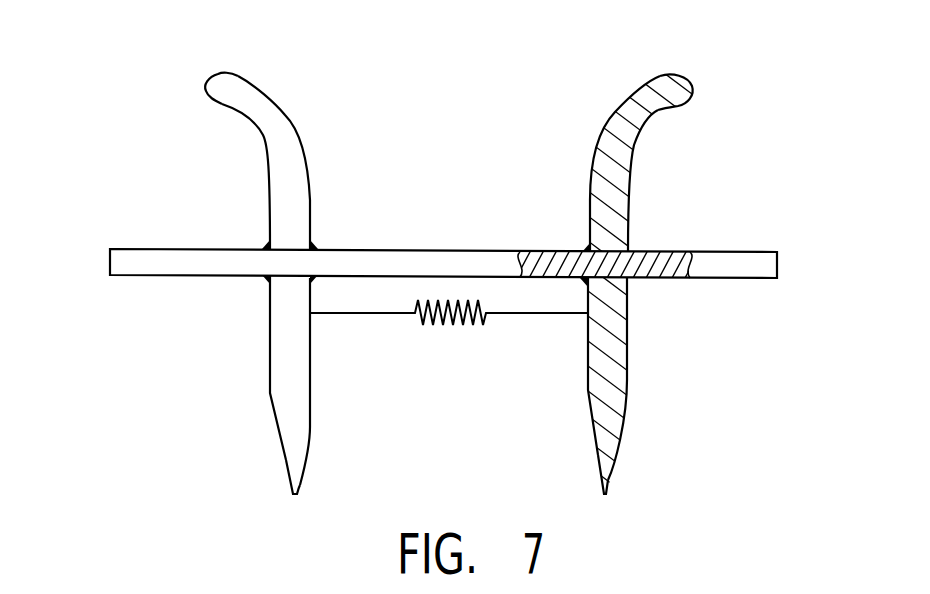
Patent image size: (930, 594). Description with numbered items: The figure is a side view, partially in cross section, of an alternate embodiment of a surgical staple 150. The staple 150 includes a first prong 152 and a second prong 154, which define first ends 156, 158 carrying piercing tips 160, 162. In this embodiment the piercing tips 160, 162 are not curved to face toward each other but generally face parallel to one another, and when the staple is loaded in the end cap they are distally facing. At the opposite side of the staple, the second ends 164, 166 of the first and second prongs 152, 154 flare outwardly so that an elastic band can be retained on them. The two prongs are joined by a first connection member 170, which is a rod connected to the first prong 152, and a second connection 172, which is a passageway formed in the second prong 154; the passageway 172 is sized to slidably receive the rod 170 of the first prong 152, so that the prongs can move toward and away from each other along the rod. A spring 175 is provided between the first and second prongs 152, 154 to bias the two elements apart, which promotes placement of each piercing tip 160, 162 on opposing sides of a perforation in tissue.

The surgical staple 150 is at (134, 154).
The first prong 152 is at (292, 157).
The second prong 154 is at (617, 158).
The first end 156 is at (283, 397).
The first end 158 is at (616, 390).
The piercing tip 160 is at (293, 495).
The piercing tip 162 is at (606, 496).
The second end 164 is at (228, 93).
The second end 166 is at (668, 97).
The first connection member 170 is at (375, 256).
The second connection 172 is at (627, 248).
The spring 175 is at (447, 318).